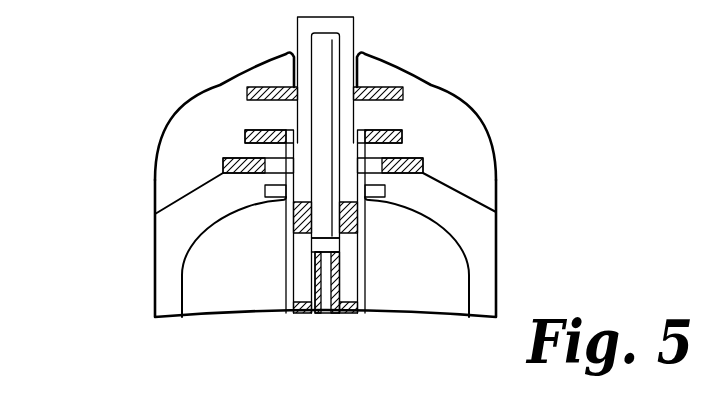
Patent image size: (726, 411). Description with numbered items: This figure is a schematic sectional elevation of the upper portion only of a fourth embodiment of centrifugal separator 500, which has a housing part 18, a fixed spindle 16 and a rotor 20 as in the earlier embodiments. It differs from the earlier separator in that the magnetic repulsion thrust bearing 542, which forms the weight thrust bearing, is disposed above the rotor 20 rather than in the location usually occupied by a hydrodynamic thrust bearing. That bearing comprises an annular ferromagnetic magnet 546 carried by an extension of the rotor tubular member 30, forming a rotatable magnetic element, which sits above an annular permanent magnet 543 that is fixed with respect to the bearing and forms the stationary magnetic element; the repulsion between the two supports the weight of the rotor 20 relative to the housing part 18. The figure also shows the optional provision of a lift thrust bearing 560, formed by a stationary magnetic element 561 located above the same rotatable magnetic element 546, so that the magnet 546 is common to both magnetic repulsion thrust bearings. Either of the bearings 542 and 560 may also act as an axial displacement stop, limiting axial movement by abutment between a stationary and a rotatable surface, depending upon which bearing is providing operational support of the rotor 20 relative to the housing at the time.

The centrifugal separator 500 is at (148, 115).
The housing part 18 is at (153, 263).
The rotor 20 is at (181, 256).
The magnetic repulsion thrust bearing 542 is at (416, 143).
The lift thrust bearing 560 is at (408, 104).
The stationary magnetic element 561 is at (263, 92).
The annular ferromagnetic magnet 546 is at (252, 130).
The annular permanent magnet 543 is at (222, 166).
The rotor tubular member 30 is at (365, 219).
The fixed spindle 16 is at (312, 290).